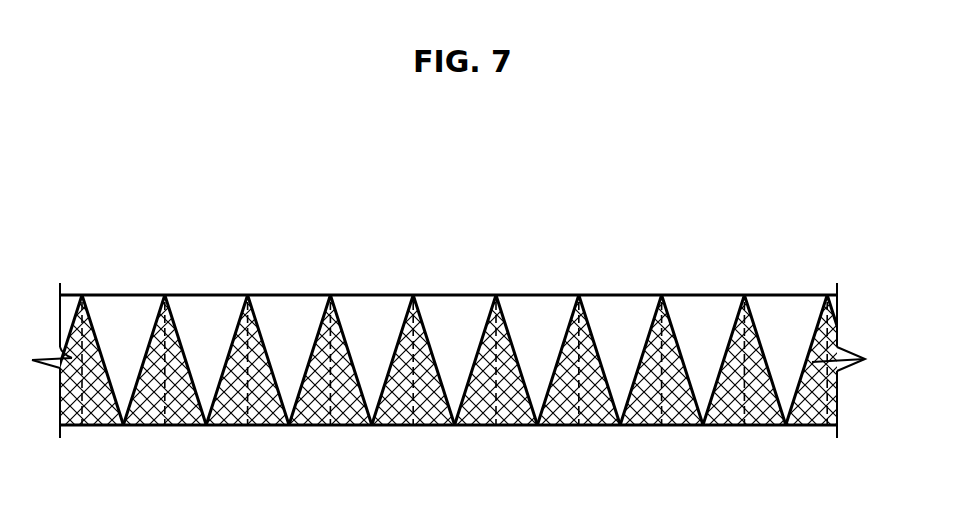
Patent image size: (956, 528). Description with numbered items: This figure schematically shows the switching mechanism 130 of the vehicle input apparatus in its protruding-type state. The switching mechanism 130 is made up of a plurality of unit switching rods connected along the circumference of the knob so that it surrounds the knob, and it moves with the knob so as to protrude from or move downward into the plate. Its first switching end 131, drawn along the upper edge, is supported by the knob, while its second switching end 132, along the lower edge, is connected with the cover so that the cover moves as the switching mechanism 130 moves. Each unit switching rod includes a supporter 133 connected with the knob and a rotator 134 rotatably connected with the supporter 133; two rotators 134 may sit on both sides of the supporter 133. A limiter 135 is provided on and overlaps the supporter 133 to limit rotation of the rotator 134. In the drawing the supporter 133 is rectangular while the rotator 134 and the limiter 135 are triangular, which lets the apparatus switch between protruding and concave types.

The switching mechanism 130 is at (513, 185).
The first switching end 131 is at (287, 294).
The second switching end 132 is at (270, 427).
The supporter 133 is at (350, 358).
The rotator 134 is at (455, 399).
The limiter 135 is at (267, 315).